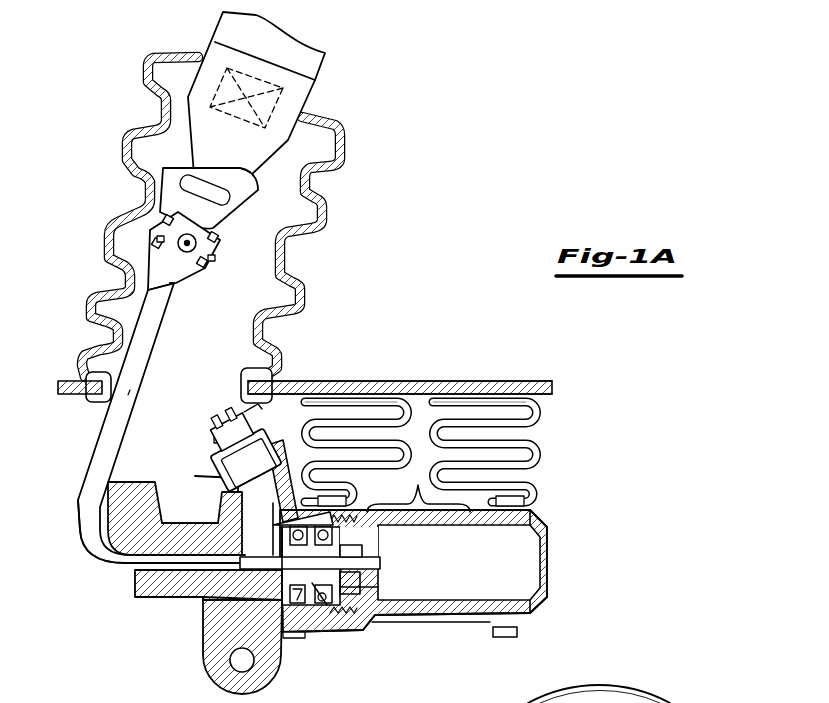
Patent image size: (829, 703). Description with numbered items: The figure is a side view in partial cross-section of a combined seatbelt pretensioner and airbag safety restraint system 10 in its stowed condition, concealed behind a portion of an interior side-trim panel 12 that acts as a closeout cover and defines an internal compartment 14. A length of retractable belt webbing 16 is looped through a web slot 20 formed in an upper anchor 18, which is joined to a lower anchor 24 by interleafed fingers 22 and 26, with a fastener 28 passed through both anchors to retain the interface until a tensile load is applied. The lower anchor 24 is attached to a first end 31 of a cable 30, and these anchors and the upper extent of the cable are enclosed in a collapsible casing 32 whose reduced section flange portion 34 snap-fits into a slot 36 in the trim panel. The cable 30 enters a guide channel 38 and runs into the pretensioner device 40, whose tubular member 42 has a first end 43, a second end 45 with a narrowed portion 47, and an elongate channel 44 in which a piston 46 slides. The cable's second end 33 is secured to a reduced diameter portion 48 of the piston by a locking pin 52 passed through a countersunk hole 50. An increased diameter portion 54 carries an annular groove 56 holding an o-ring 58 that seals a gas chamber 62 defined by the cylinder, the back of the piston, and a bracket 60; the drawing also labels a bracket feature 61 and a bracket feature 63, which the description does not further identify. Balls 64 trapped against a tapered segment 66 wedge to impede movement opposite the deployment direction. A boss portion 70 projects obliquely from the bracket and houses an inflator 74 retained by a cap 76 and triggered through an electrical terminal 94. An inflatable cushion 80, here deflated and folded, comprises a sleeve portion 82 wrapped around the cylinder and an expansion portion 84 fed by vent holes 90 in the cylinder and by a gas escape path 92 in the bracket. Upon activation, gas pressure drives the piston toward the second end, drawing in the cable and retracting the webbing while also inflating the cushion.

The safety restraint system 10 is at (417, 168).
The interior side-trim panel 12 is at (505, 381).
The internal compartment 14 is at (294, 385).
The belt webbing 16 is at (212, 48).
The upper anchor 18 is at (252, 222).
The web slot 20 is at (232, 200).
The fingers 22 is at (164, 219).
The lower anchor 24 is at (158, 296).
The fingers 26 is at (158, 240).
The fastener 28 is at (188, 253).
The cable 30 is at (130, 413).
The first end of cable 31 is at (177, 285).
The collapsible casing 32 is at (328, 222).
The second end of cable 33 is at (382, 564).
The reduced section flange portion 34 is at (92, 405).
The slot 36 is at (112, 393).
The guide channel 38 is at (170, 572).
The pretensioner device 40 is at (130, 626).
The tubular member 42 is at (410, 623).
The first end of cylinder 43 is at (340, 613).
The channel 44 is at (448, 592).
The second end of cylinder 45 is at (518, 630).
The piston 46 is at (265, 600).
The narrowed portion 47 is at (545, 610).
The reduced diameter portion 48 is at (370, 590).
The countersunk hole 50 is at (350, 551).
The locking pin 52 is at (362, 578).
The increased diameter portion 54 is at (360, 605).
The annular groove 56 is at (297, 612).
The o-ring 58 is at (290, 550).
The bracket 60 is at (132, 537).
The block 61 is at (137, 482).
The gas chamber 62 is at (258, 497).
The notch 63 is at (180, 522).
The balls 64 is at (280, 569).
The tapered segment 66 is at (322, 610).
The boss portion 70 is at (263, 430).
The inflation fluid dispensing apparatus 74 is at (218, 478).
The cap 76 is at (214, 446).
The inflatable cushion 80 is at (458, 388).
The sleeve portion 82 is at (470, 624).
The expansion portion 84 is at (537, 432).
The vent holes 90 is at (420, 506).
The gas escape path 92 is at (318, 540).
The electrical terminal 94 is at (236, 427).